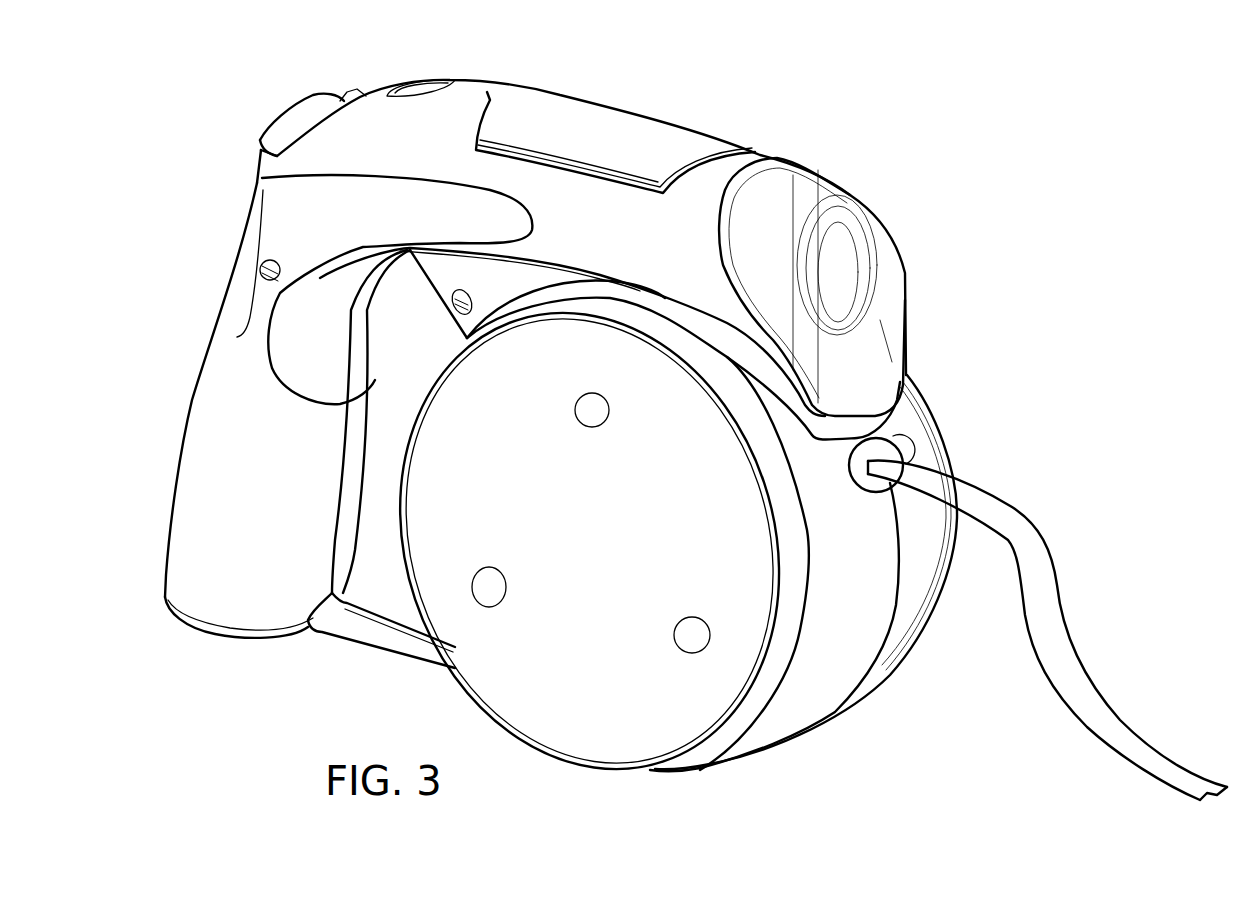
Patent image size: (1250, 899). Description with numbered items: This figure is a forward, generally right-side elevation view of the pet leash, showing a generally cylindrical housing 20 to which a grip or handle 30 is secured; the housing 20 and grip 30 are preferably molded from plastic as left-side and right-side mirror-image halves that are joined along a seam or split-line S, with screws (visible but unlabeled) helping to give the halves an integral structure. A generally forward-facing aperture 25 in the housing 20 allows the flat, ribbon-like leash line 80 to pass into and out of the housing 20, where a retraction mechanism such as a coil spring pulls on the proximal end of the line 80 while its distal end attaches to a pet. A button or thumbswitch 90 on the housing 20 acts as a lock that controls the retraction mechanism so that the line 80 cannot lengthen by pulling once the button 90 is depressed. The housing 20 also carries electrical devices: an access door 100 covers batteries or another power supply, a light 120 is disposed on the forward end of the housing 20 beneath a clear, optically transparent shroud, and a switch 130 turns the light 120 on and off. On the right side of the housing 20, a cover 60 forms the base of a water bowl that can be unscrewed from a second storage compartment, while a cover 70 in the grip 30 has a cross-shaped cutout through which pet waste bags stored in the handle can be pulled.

The housing 20 is at (869, 581).
The aperture 25 is at (893, 441).
The grip 30 is at (265, 513).
The cover 60 is at (729, 571).
The cover 70 is at (227, 641).
The line 80 is at (1048, 590).
The button 90 is at (283, 115).
The access door 100 is at (600, 116).
The light 120 is at (848, 268).
The switch 130 is at (345, 90).
The split-line S is at (880, 650).